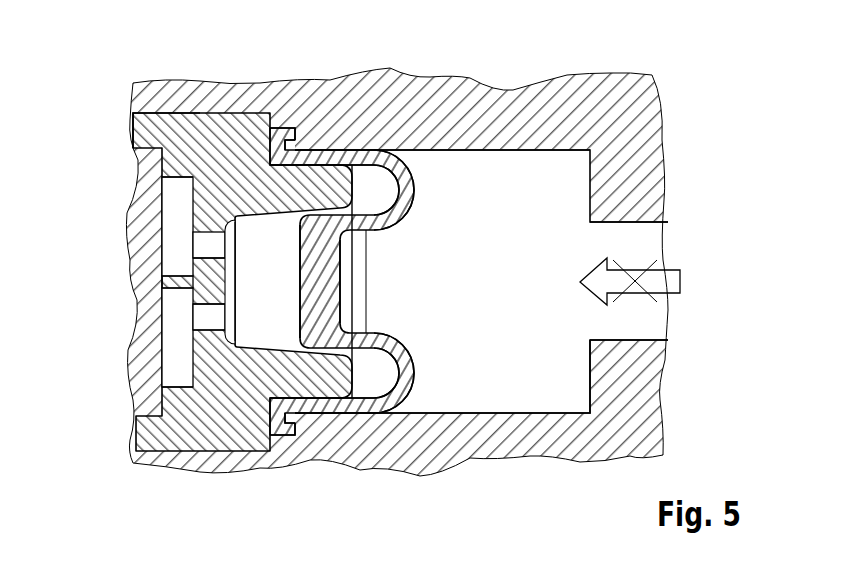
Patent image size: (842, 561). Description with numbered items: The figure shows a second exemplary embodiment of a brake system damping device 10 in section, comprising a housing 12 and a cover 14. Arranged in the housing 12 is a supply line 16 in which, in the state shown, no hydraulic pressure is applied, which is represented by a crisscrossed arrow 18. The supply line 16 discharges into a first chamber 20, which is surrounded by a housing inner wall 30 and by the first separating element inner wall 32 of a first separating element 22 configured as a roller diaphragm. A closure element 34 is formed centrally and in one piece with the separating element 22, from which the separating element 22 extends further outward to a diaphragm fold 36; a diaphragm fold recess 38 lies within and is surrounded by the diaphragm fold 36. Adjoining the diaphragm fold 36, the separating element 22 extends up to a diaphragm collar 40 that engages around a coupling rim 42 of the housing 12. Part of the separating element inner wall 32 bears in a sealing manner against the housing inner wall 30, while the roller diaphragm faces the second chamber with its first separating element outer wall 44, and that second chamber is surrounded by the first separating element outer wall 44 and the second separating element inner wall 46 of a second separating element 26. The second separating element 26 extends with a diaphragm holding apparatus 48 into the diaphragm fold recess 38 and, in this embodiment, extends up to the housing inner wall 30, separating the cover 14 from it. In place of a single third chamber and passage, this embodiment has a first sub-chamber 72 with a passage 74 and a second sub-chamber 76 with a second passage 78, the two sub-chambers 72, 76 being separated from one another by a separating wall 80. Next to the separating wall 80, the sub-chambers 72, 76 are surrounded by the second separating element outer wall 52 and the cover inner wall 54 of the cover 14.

The brake system damping device 10 is at (688, 70).
The housing 12 is at (632, 120).
The cover 14 is at (150, 190).
The supply line 16 is at (662, 240).
The crisscrossed arrow 18 is at (664, 283).
The first chamber 20 is at (572, 392).
The first separating element 22 is at (327, 150).
The second separating element 26 is at (132, 110).
The housing inner wall 30 is at (553, 152).
The first separating element inner wall 32 is at (340, 272).
The closure element 34 is at (340, 308).
The diaphragm fold 36 is at (408, 188).
The diaphragm fold recess 38 is at (373, 195).
The diaphragm collar 40 is at (282, 128).
The coupling rim 42 is at (291, 143).
The first separating element outer wall 44 is at (293, 275).
The second separating element inner wall 46 is at (244, 340).
The diaphragm holding apparatus 48 is at (330, 165).
The second separating element outer wall 52 is at (182, 217).
The cover inner wall 54 is at (180, 193).
The first sub-chamber 72 is at (207, 246).
The passage 74 is at (205, 270).
The second sub-chamber 76 is at (205, 338).
The second passage 78 is at (207, 320).
The separating wall 80 is at (178, 283).